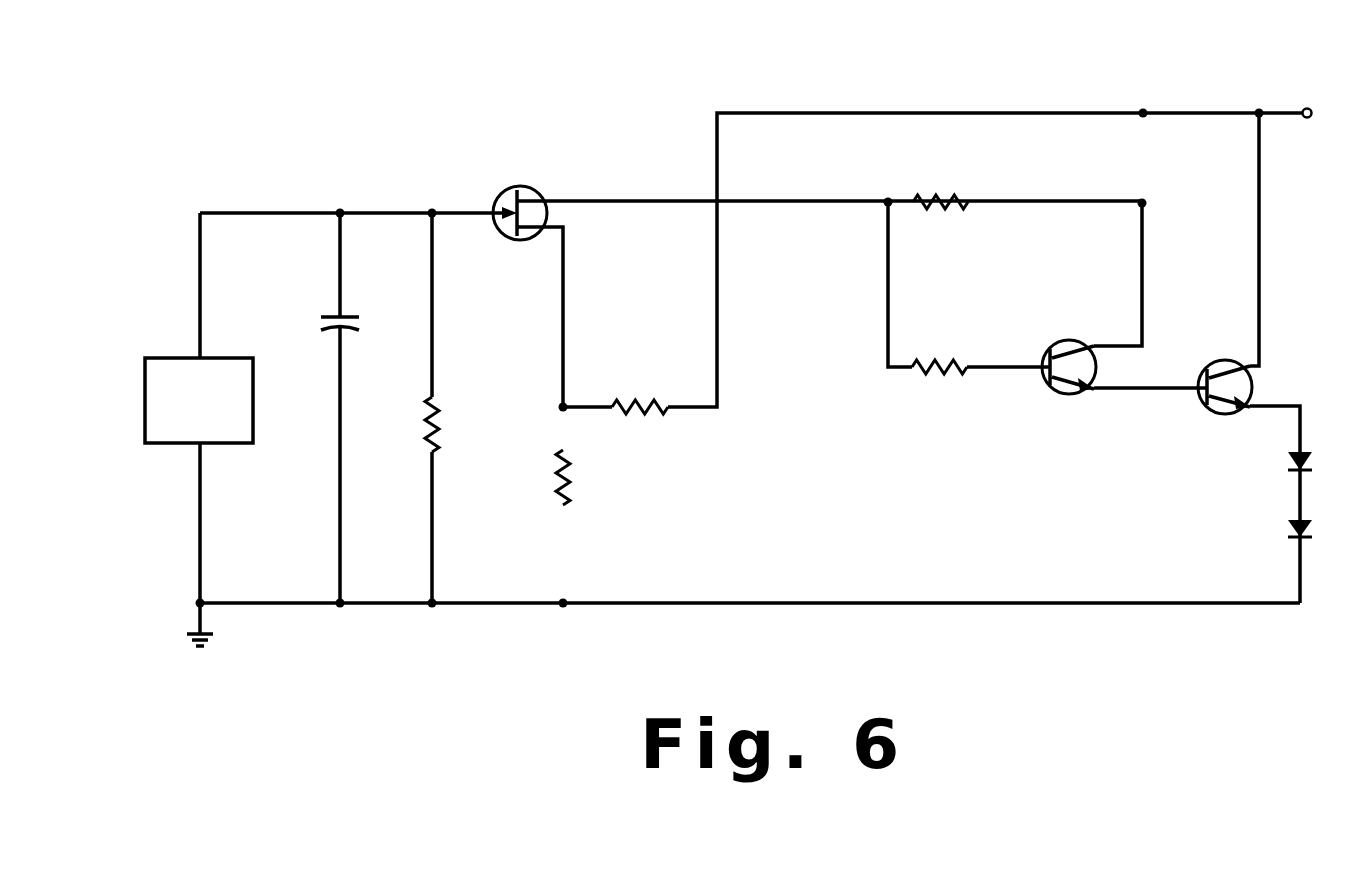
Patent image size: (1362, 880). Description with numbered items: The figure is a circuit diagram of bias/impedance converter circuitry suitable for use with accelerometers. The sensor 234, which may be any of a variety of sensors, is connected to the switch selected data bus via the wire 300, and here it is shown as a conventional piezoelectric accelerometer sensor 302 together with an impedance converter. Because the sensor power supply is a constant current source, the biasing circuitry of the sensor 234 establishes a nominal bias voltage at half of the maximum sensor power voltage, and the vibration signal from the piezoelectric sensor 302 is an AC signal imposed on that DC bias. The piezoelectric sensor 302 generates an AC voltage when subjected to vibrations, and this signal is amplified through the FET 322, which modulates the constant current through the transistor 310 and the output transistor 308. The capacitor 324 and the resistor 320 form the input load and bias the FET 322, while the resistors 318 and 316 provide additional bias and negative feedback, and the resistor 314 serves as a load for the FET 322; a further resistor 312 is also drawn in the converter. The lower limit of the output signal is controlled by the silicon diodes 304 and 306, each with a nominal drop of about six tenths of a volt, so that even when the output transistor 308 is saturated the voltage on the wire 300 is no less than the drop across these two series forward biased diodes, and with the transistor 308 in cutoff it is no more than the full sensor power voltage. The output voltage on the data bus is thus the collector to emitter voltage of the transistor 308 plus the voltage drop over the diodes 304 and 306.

The sensor 234 is at (698, 676).
The wire 300 is at (1285, 111).
The piezoelectric accelerometer sensor 302 is at (220, 443).
The diode 304 is at (1287, 463).
The diode 306 is at (1287, 531).
The output transistor 308 is at (1220, 358).
The transistor 310 is at (1070, 392).
The resistor 312 is at (942, 373).
The resistor 314 is at (922, 200).
The resistor 316 is at (647, 400).
The resistor 318 is at (558, 478).
The resistor 320 is at (447, 428).
The FET 322 is at (528, 187).
The capacitor 324 is at (333, 315).